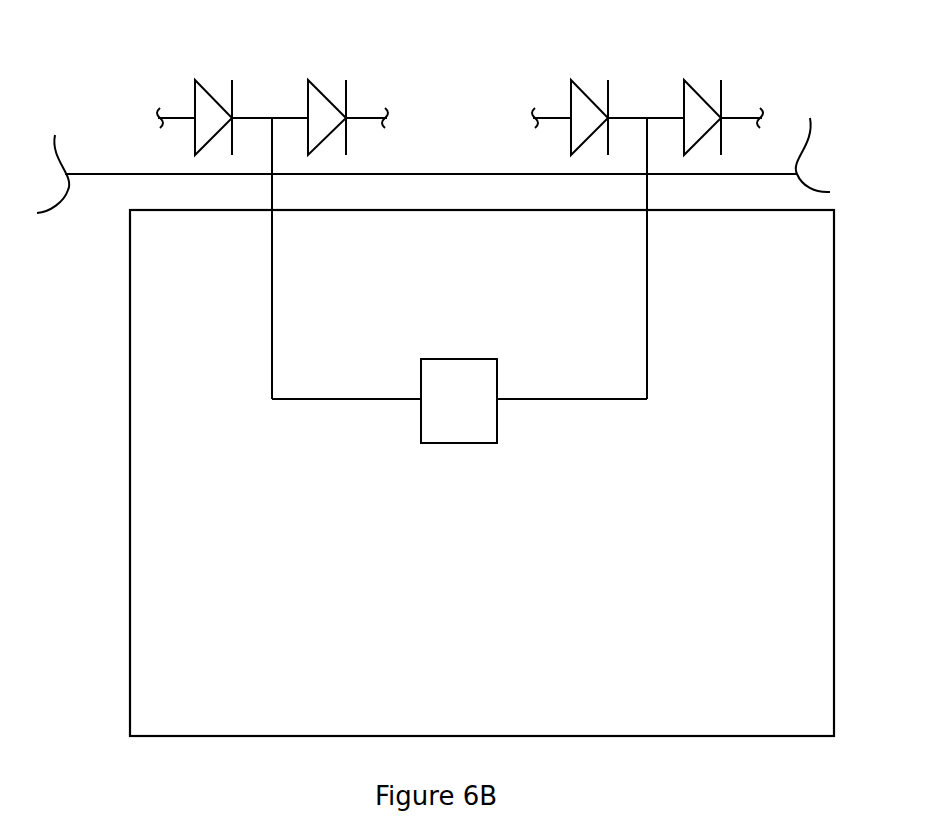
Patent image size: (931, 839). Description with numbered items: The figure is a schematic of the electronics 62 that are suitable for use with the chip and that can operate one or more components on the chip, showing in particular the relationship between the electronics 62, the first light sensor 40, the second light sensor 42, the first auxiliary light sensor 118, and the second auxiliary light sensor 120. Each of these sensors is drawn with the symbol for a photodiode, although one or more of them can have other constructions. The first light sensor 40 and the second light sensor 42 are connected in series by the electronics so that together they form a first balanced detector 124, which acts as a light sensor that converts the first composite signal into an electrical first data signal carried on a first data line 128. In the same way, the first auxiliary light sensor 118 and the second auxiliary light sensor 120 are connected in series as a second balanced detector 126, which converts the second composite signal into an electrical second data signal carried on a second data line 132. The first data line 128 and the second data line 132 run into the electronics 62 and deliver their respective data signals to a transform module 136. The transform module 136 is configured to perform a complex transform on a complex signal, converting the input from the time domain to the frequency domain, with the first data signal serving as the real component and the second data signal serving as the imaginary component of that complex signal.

The first light sensor 40 is at (195, 80).
The second light sensor 42 is at (310, 80).
The electronics 62 is at (130, 238).
The first auxiliary light sensor 118 is at (571, 80).
The second auxiliary light sensor 120 is at (684, 80).
The first balanced detector 124 is at (258, 48).
The second balanced detector 126 is at (647, 60).
The first data line 128 is at (272, 235).
The second data line 132 is at (647, 230).
The transform module 136 is at (497, 372).